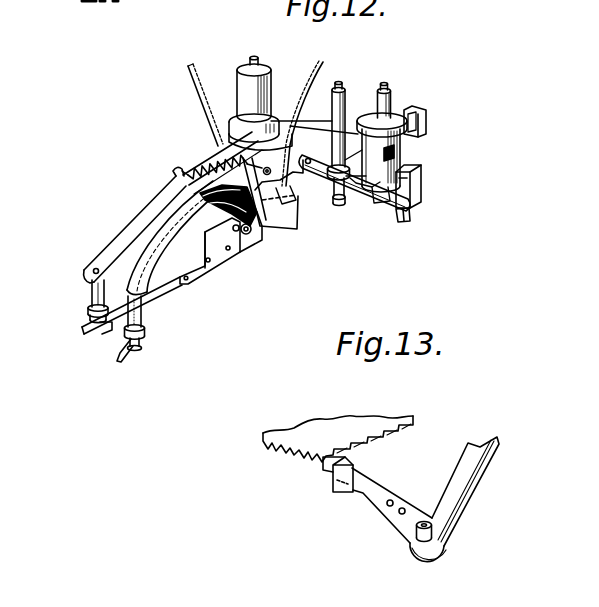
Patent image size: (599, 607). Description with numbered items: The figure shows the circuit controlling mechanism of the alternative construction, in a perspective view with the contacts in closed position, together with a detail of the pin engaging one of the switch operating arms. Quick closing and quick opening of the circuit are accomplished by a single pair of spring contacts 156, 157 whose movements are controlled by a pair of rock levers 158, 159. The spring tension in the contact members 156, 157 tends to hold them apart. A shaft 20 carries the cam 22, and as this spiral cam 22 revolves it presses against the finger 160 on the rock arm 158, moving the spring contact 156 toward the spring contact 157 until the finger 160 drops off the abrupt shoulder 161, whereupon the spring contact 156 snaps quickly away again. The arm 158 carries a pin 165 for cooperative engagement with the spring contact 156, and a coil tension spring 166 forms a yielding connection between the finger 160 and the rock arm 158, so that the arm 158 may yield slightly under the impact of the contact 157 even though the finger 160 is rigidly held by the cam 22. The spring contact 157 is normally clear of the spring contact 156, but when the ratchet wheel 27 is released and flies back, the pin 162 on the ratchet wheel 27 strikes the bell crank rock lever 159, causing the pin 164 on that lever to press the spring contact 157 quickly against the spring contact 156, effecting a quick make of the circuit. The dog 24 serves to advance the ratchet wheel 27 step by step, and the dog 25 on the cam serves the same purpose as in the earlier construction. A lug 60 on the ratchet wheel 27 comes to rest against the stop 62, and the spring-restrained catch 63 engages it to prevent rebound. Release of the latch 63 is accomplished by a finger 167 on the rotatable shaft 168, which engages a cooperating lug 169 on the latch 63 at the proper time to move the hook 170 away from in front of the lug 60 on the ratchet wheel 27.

In FIG. 12, the shaft 20 is at (390, 100).
In FIG. 12, the cam 22 is at (398, 110).
In FIG. 12, the dog 24 is at (400, 160).
In FIG. 12, the dog 25 is at (354, 127).
In FIG. 13, the ratchet 27 is at (368, 430).
In FIG. 12, the lug 60 is at (424, 188).
In FIG. 12, the stop 62 is at (410, 216).
In FIG. 12, the catch 63 is at (378, 190).
In FIG. 12, the spring contact 156 is at (82, 332).
In FIG. 12, the spring contact 157 is at (165, 286).
In FIG. 12, the rock lever 158 is at (160, 218).
In FIG. 12, the bell crank rock lever 159 is at (240, 236).
In FIG. 12, the finger 160 is at (427, 112).
In FIG. 12, the shoulder 161 is at (426, 120).
In FIG. 13, the pin 162 is at (331, 467).
In FIG. 12, the pin 164 is at (142, 318).
In FIG. 12, the pin 165 is at (91, 292).
In FIG. 12, the coil tension spring 166 is at (200, 170).
In FIG. 12, the finger 167 is at (355, 198).
In FIG. 12, the rotatable shaft 168 is at (408, 147).
In FIG. 12, the lug 169 is at (381, 196).
In FIG. 12, the hook 170 is at (414, 205).